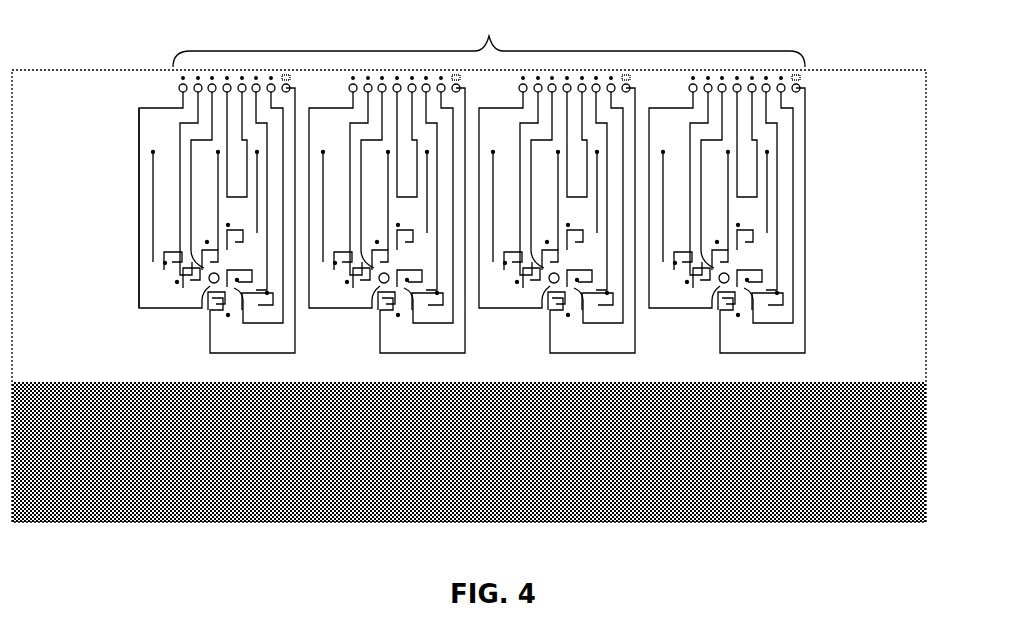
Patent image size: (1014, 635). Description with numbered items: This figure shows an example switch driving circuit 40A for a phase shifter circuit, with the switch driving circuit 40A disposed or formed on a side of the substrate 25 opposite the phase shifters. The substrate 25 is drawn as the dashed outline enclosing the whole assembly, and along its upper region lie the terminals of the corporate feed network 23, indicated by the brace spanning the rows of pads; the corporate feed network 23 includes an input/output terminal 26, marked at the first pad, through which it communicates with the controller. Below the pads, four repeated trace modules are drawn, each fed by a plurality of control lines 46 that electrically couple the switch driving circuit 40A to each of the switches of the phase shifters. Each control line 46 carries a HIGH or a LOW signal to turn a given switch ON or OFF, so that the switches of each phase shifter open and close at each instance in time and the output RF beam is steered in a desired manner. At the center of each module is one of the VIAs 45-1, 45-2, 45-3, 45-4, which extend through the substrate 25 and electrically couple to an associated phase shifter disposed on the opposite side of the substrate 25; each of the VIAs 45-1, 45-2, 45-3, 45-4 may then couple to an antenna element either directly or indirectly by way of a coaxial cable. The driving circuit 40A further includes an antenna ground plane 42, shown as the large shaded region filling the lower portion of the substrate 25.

The substrate 25 is at (93, 86).
The switch driving circuit 40A is at (149, 78).
The input/output (IO) terminal 26 is at (234, 55).
The corporate feed network 23 is at (489, 39).
The control lines 46 is at (124, 147).
The VIA 45-1 is at (217, 186).
The VIA 45-2 is at (381, 284).
The VIA 45-3 is at (551, 284).
The VIA 45-4 is at (721, 284).
The antenna ground plane 42 is at (150, 393).